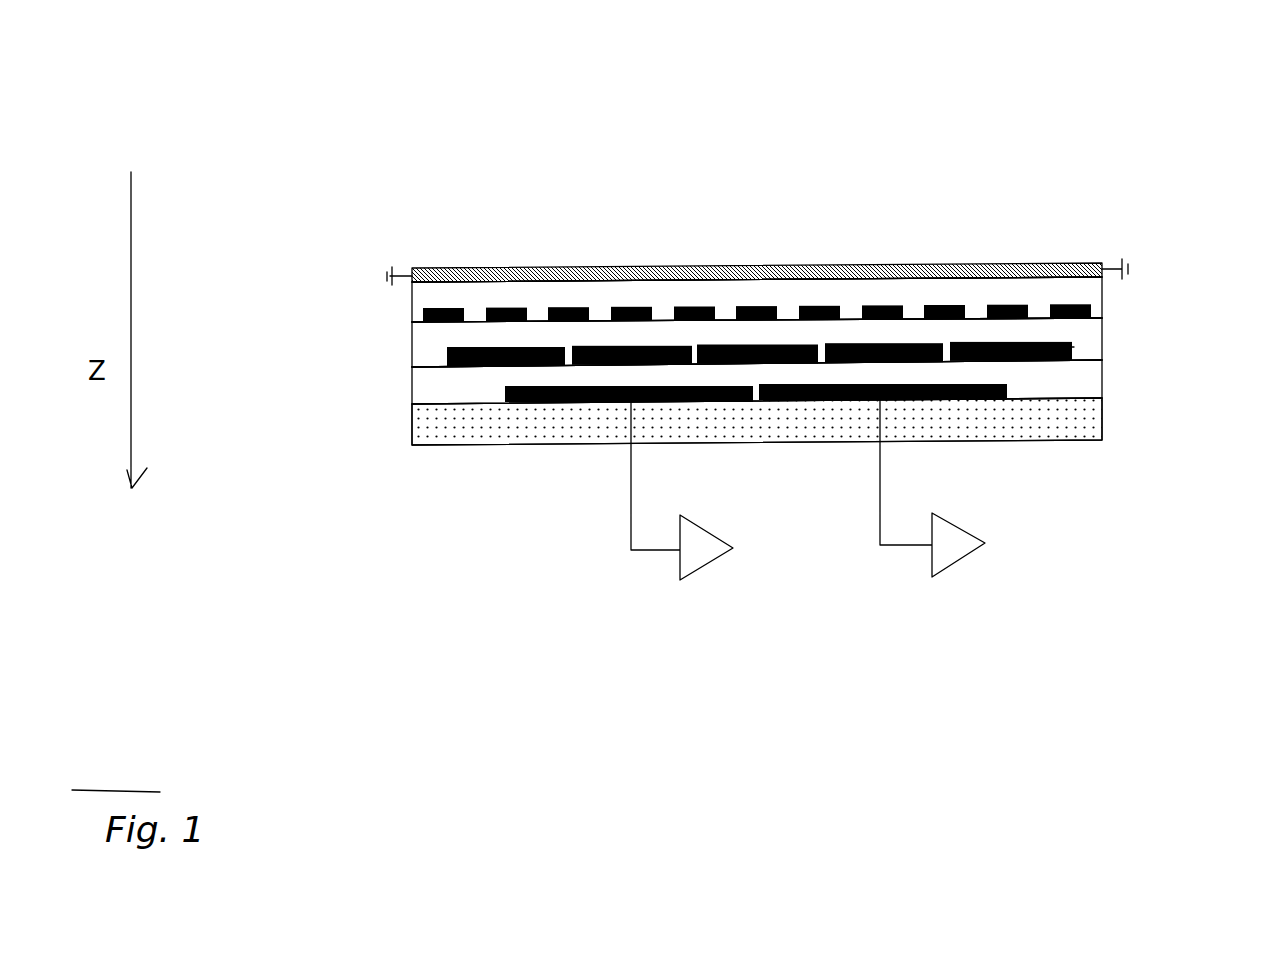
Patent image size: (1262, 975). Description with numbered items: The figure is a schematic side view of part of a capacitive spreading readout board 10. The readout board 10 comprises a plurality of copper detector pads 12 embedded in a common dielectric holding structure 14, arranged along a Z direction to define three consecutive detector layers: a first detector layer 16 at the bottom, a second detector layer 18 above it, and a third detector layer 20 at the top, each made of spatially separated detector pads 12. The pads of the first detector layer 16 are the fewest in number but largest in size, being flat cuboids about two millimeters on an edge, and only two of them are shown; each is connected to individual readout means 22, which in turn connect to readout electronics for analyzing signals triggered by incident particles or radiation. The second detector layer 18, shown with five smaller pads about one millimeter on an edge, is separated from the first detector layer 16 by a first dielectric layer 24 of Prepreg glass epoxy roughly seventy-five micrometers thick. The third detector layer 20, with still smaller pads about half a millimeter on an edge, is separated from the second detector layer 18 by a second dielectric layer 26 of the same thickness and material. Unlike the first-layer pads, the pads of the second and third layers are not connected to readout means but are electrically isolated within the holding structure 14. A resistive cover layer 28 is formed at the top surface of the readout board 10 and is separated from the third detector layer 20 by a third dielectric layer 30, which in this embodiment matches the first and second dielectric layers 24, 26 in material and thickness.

The capacitive spreading readout board 10 is at (1116, 171).
The detector pads 12 is at (1090, 310).
The holding structure 14 is at (1106, 424).
The first detector layer 16 is at (384, 399).
The second detector layer 18 is at (391, 361).
The third detector layer 20 is at (394, 305).
The readout means 22 is at (710, 560).
The first dielectric layer 24 is at (1090, 383).
The second dielectric layer 26 is at (423, 338).
The resistive cover layer 28 is at (745, 272).
The third dielectric layer 30 is at (1102, 295).